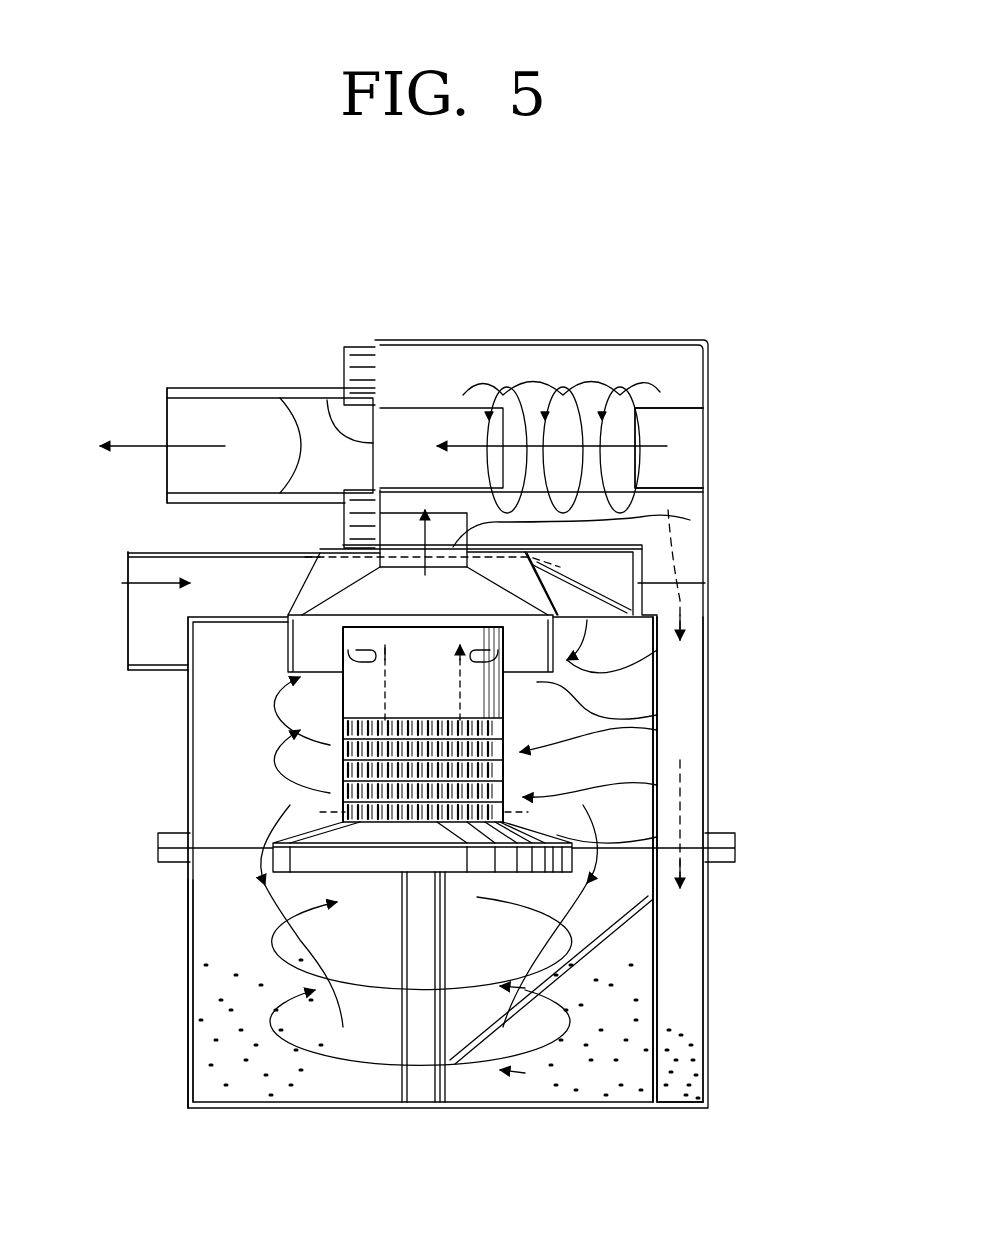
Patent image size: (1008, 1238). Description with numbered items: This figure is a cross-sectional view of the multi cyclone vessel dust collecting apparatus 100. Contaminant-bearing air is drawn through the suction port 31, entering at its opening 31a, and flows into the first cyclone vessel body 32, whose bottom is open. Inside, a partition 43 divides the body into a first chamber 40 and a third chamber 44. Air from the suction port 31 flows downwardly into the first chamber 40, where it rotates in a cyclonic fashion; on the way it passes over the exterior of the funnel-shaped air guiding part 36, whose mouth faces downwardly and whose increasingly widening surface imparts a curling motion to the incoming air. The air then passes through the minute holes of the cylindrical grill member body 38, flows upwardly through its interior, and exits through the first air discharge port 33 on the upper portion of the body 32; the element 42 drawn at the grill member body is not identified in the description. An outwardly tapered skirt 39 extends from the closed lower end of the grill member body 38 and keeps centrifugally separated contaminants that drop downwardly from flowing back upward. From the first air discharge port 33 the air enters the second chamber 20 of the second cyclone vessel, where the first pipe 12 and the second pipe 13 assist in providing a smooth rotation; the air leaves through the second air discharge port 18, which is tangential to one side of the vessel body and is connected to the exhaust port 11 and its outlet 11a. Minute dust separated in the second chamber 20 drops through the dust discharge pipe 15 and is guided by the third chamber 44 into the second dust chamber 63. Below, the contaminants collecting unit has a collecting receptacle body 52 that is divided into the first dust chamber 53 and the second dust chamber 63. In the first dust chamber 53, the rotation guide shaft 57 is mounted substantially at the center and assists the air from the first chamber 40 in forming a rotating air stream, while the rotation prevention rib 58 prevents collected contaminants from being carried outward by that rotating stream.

The multi cyclone vessel dust collecting apparatus 100 is at (778, 250).
The exhaust port 11 is at (220, 388).
The exhaust opening 11a is at (165, 405).
The first pipe 12 is at (680, 405).
The second pipe 13 is at (437, 403).
The dust discharge pipe 15 is at (700, 575).
The second air discharge port 18 is at (335, 440).
The second chamber 20 is at (645, 357).
The suction port 31 is at (135, 553).
The suction opening 31a is at (128, 640).
The first cyclone vessel body 32 is at (190, 745).
The first air discharge port 33 is at (635, 532).
The funnel-shaped air guiding part 36 is at (620, 672).
The grill member body 38 is at (515, 800).
The skirt 39 is at (575, 860).
The first chamber 40 is at (620, 718).
The grille body 42 is at (497, 690).
The partition 43 is at (655, 745).
The third chamber 44 is at (690, 785).
The collecting receptacle body 52 is at (188, 915).
The first dust chamber 53 is at (205, 1010).
The rotation guide shaft 57 is at (407, 1053).
The rotation prevention rib 58 is at (493, 1085).
The second dust chamber 63 is at (690, 995).